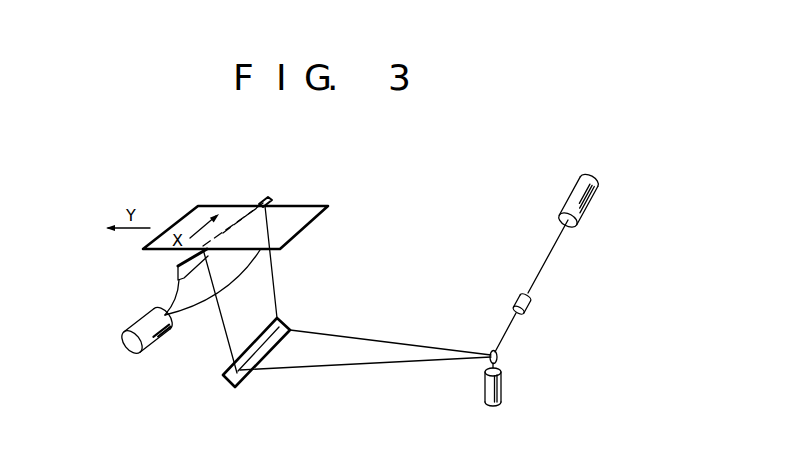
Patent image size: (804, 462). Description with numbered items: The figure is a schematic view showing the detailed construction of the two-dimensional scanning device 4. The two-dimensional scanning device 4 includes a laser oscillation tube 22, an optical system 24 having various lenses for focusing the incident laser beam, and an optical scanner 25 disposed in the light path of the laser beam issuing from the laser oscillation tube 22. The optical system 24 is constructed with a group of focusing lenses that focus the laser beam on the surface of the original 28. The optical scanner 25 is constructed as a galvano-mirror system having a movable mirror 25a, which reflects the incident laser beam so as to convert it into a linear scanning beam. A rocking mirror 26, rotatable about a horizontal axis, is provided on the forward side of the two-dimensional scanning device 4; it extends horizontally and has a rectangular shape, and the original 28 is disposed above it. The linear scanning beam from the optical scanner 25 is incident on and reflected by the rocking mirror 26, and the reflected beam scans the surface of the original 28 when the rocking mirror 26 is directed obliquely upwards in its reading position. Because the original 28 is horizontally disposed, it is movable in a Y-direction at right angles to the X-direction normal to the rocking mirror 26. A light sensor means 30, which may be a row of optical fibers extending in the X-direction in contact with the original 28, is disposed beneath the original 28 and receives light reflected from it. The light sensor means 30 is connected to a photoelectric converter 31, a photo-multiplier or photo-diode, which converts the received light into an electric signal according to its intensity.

The two-dimensional scanning device 4 is at (478, 228).
The laser oscillation tube 22 is at (583, 207).
The optical system 24 is at (530, 308).
The optical scanner 25 is at (501, 392).
The movable mirror 25a is at (498, 357).
The rocking mirror 26 is at (226, 378).
The original 28 is at (297, 218).
The light sensor means 30 is at (178, 275).
The photoelectric converter 31 is at (150, 348).